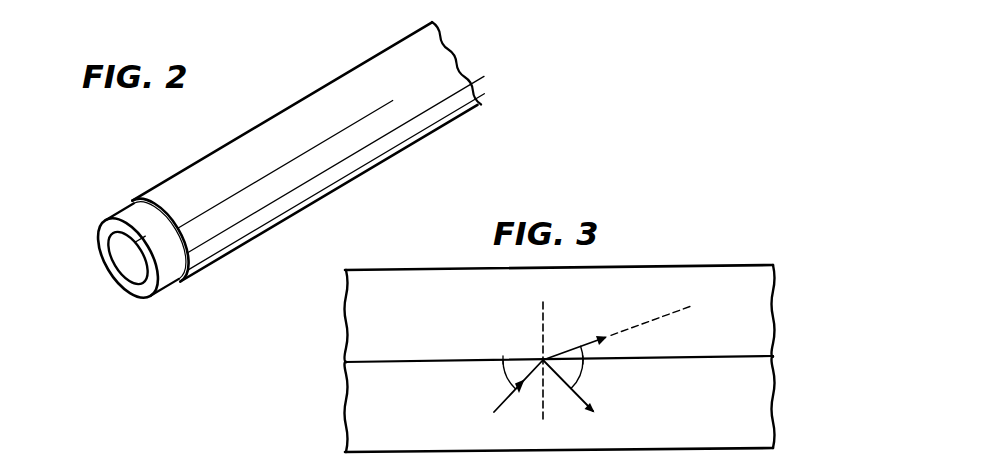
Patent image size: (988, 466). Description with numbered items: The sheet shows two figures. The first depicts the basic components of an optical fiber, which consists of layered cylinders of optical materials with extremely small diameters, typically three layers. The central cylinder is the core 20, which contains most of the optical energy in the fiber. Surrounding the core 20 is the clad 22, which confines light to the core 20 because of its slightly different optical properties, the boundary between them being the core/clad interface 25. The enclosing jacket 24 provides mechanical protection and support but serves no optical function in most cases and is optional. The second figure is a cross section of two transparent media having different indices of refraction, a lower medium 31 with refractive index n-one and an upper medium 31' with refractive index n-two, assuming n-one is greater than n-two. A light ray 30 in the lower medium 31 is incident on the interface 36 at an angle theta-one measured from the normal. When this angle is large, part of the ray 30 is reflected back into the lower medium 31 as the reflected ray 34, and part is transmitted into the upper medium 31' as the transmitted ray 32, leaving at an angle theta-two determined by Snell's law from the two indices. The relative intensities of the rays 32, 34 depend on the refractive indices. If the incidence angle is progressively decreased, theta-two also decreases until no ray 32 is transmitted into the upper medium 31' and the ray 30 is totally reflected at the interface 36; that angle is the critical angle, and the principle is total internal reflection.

In FIG. 2, the core 20 is at (132, 275).
In FIG. 2, the clad 22 is at (118, 212).
In FIG. 2, the jacket 24 is at (243, 133).
In FIG. 2, the core/clad interface 25 is at (102, 240).
In FIG. 3, the light ray 30 is at (505, 402).
In FIG. 3, the lower medium 31 is at (590, 405).
In FIG. 3, the upper medium 31' is at (595, 313).
In FIG. 3, the transmitted ray 32 is at (562, 350).
In FIG. 3, the reflected ray 34 is at (587, 402).
In FIG. 3, the interface 36 is at (398, 362).